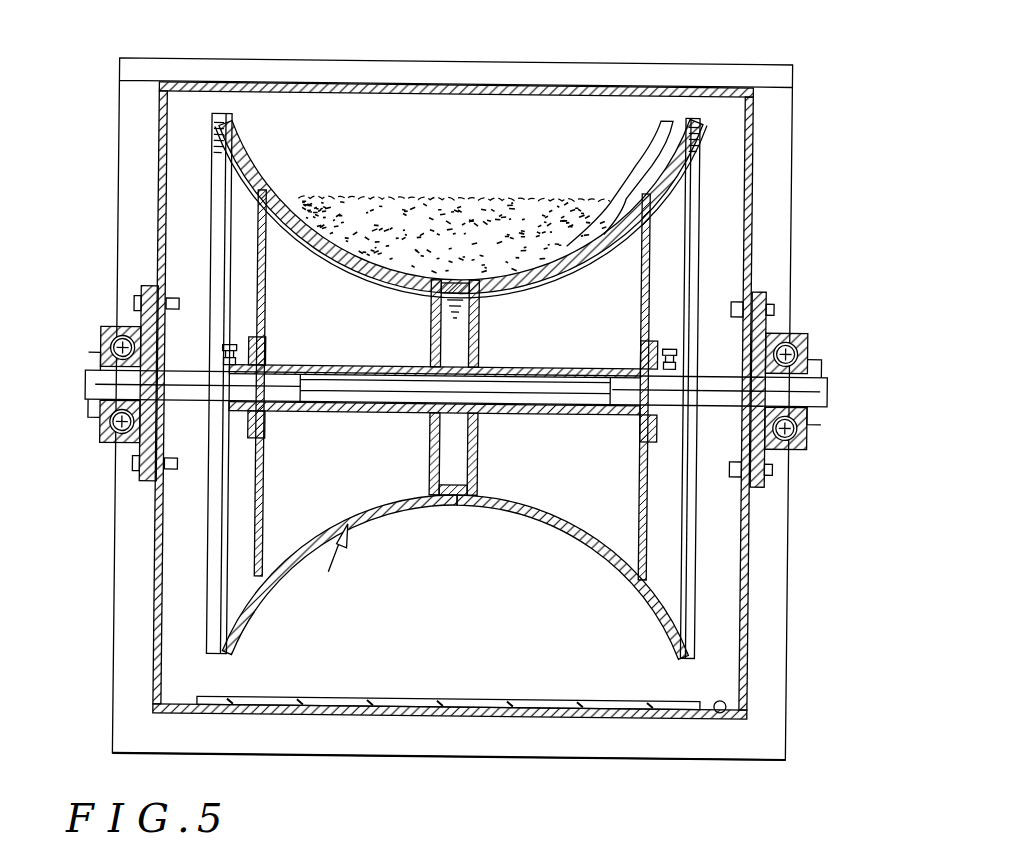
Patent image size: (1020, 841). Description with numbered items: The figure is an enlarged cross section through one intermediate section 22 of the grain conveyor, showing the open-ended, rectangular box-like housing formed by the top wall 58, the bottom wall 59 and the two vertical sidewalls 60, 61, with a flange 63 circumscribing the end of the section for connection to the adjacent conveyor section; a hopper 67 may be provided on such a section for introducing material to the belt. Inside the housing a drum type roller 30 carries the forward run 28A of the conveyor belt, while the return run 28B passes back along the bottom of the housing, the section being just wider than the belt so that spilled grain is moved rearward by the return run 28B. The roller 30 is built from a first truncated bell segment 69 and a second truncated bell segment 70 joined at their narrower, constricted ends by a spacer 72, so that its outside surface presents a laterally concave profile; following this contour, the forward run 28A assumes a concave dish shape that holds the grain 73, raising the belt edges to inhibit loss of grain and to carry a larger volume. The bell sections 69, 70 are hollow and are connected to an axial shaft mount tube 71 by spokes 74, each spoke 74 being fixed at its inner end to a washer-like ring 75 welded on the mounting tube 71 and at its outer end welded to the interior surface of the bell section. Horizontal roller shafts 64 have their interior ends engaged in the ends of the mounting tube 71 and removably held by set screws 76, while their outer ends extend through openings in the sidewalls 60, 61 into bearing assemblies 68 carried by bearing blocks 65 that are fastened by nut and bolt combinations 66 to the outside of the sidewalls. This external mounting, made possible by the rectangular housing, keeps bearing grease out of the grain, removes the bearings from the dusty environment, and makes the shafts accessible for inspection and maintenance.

The intermediate section 22 is at (802, 83).
The forward run 28A is at (638, 176).
The return run 28B is at (432, 699).
The drum type roller 30 is at (326, 561).
The top wall 58 is at (419, 99).
The bottom wall 59 is at (730, 715).
The sidewall 60 is at (745, 582).
The sidewall 61 is at (162, 578).
The flange 63 is at (778, 147).
The roller shaft 64 is at (97, 389).
The bearing block 65 is at (142, 292).
The nut and bolt combination 66 is at (128, 465).
The hopper 67 is at (98, 424).
The bearing assembly 68 is at (103, 341).
The first truncated bell segment 69 is at (373, 508).
The second truncated bell segment 70 is at (552, 510).
The shaft mount tube 71 is at (410, 367).
The spacer 72 is at (451, 508).
The grain 73 is at (397, 200).
The spoke 74 is at (266, 292).
The washer-like ring 75 is at (260, 347).
The set screw 76 is at (226, 351).